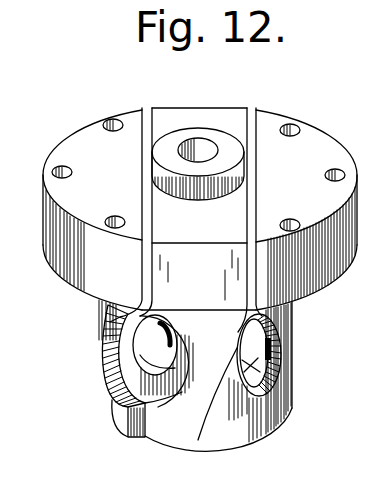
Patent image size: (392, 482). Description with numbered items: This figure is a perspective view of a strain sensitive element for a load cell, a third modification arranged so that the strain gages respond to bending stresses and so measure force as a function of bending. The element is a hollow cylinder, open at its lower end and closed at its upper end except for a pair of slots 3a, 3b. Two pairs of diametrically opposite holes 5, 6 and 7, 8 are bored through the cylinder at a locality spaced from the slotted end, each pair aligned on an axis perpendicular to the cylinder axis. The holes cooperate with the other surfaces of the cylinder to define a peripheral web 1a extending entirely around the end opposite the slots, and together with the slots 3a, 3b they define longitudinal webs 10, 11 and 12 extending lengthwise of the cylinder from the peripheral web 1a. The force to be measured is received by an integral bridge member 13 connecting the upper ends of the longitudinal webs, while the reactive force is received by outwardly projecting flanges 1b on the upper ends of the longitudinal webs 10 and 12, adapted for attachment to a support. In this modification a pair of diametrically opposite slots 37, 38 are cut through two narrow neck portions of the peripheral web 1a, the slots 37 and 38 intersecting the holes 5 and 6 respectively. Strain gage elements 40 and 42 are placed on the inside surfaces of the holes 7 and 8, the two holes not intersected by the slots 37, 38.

The peripheral web 1a is at (262, 432).
The outwardly projecting flanges 1b is at (72, 279).
The slot 3a is at (145, 107).
The slot 3b is at (248, 107).
The hole 5 is at (208, 437).
The hole 6 is at (116, 404).
The hole 7 is at (110, 346).
The hole 8 is at (258, 391).
The longitudinal web 10 is at (104, 320).
The longitudinal web 11 is at (225, 345).
The longitudinal web 12 is at (286, 322).
The bridge member 13 is at (212, 284).
The slot 37 is at (272, 373).
The slot 38 is at (140, 437).
The strain gage element 40 is at (115, 382).
The strain gage element 42 is at (278, 350).